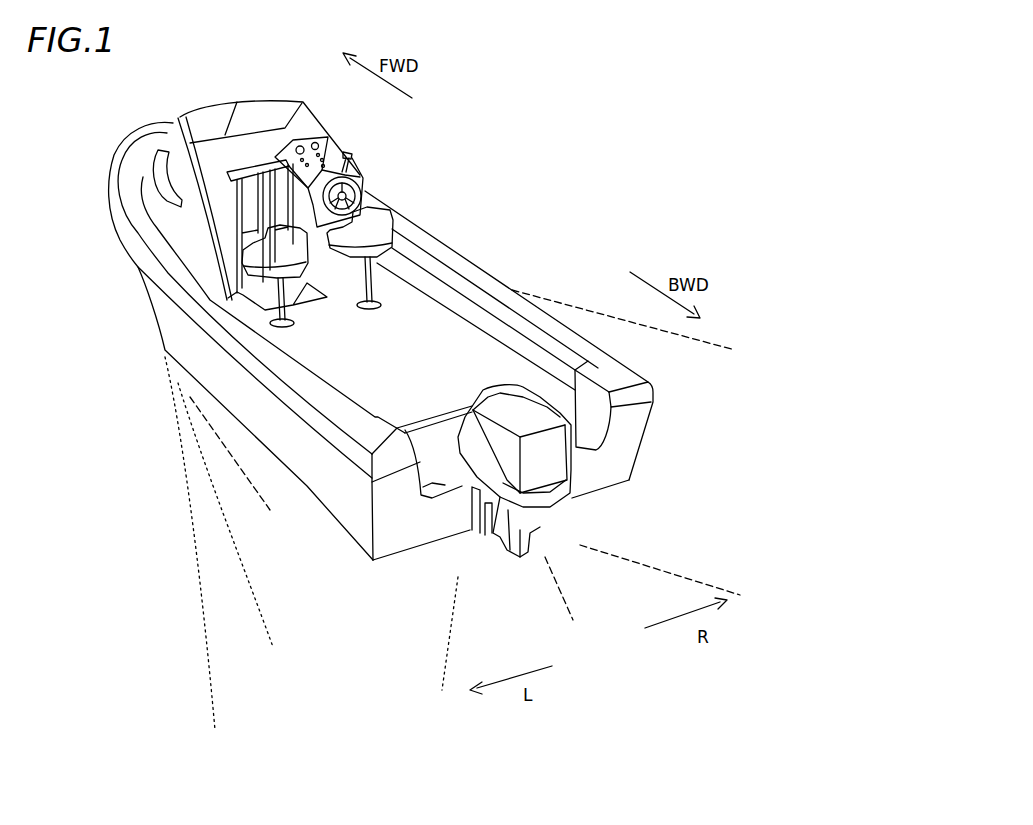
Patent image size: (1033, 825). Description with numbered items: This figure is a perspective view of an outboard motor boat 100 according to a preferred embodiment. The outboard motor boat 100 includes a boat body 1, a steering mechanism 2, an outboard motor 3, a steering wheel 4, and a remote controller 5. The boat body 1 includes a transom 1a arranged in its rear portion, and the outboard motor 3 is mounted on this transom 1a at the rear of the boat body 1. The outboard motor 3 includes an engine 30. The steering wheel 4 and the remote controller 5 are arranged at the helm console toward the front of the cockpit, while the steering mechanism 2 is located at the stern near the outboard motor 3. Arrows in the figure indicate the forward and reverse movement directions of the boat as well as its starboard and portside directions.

The outboard motor boat 100 is at (500, 155).
The boat body 1 is at (513, 291).
The transom 1a is at (385, 530).
The steering mechanism 2 is at (450, 472).
The outboard motor 3 is at (498, 385).
The engine 30 is at (545, 456).
The steering wheel 4 is at (361, 200).
The remote controller 5 is at (350, 150).